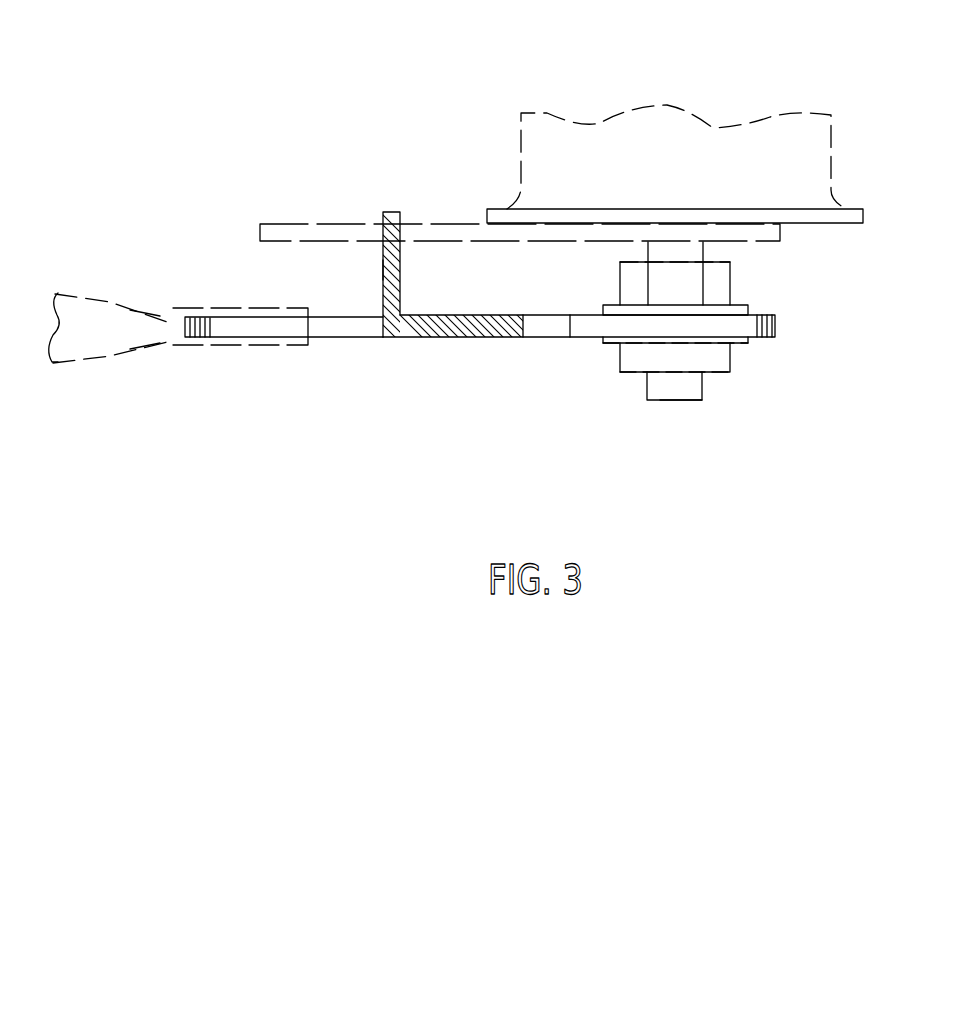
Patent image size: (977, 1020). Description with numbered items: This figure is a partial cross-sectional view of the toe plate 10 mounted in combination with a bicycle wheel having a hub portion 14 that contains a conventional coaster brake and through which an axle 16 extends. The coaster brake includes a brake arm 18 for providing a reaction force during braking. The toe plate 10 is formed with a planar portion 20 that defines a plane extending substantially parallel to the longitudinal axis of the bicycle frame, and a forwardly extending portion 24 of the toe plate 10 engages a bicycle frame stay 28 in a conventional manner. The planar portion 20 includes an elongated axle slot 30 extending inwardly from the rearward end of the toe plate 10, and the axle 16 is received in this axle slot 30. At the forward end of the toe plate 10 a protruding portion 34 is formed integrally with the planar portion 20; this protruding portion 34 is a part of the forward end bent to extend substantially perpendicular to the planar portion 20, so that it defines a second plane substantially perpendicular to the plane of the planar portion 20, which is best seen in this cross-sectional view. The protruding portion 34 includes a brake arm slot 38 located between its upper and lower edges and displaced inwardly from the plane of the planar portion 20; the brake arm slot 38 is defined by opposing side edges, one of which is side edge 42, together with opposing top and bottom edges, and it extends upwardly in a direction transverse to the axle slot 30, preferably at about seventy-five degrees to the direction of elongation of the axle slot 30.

The toe plate 10 is at (392, 350).
The hub portion 14 is at (800, 222).
The axle 16 is at (702, 402).
The brake arm 18 is at (440, 225).
The planar portion 20 is at (497, 336).
The forwardly extending portion 24 is at (240, 330).
The bicycle frame stay 28 is at (100, 297).
The axle slot 30 is at (632, 326).
The protruding portion 34 is at (387, 268).
The brake arm slot 38 is at (387, 228).
The side edge 42 is at (843, 184).